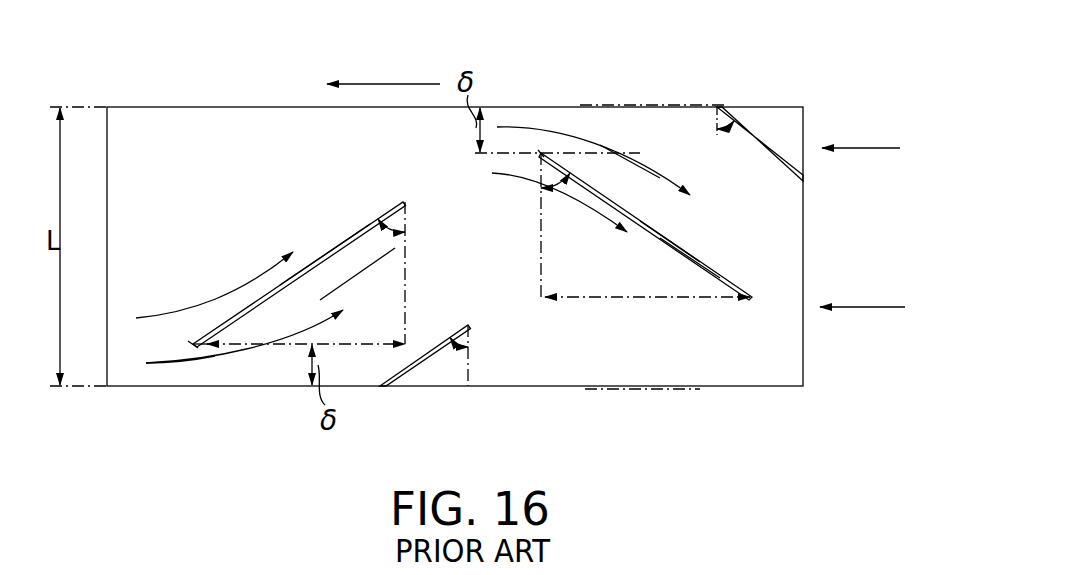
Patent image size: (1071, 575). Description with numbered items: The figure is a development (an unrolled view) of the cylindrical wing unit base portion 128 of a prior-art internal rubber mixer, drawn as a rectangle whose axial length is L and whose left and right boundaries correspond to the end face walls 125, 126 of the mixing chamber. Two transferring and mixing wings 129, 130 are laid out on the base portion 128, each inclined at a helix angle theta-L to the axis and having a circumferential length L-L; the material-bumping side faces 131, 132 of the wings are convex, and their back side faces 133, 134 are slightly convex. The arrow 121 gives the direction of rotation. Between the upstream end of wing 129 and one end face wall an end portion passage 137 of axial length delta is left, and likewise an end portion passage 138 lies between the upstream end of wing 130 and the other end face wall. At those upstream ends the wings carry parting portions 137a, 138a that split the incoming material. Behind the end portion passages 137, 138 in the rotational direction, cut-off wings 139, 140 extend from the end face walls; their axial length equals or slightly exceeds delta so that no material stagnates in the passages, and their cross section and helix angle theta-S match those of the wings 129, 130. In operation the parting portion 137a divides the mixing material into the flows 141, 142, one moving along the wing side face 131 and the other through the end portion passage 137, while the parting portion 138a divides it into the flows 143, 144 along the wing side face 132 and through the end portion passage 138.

The arrow direction of rotation 121 is at (390, 84).
The end face wall of the mixing chamber 125 is at (665, 107).
The end face wall of the mixing chamber 126 is at (685, 390).
The wing unit base portion 128 is at (790, 355).
The transferring and mixing wing 129 is at (348, 222).
The transferring and mixing wing 130 is at (693, 242).
The wing side face 131 is at (331, 236).
The wing side face 132 is at (690, 266).
The back side face of wing 133 is at (342, 237).
The back side face of wing 134 is at (718, 270).
The end portion passage 137 is at (197, 372).
The parting portion 137a is at (193, 345).
The end portion passage 138 is at (545, 128).
The parting portion 138a is at (541, 153).
The cut-off wing 139 is at (410, 382).
The cut-off wing 140 is at (781, 165).
The arrow direction of material flow 141 is at (196, 313).
The arrow direction of material flow 142 is at (258, 352).
The arrow direction of material flow 143 is at (565, 195).
The arrow direction of material flow 144 is at (650, 165).